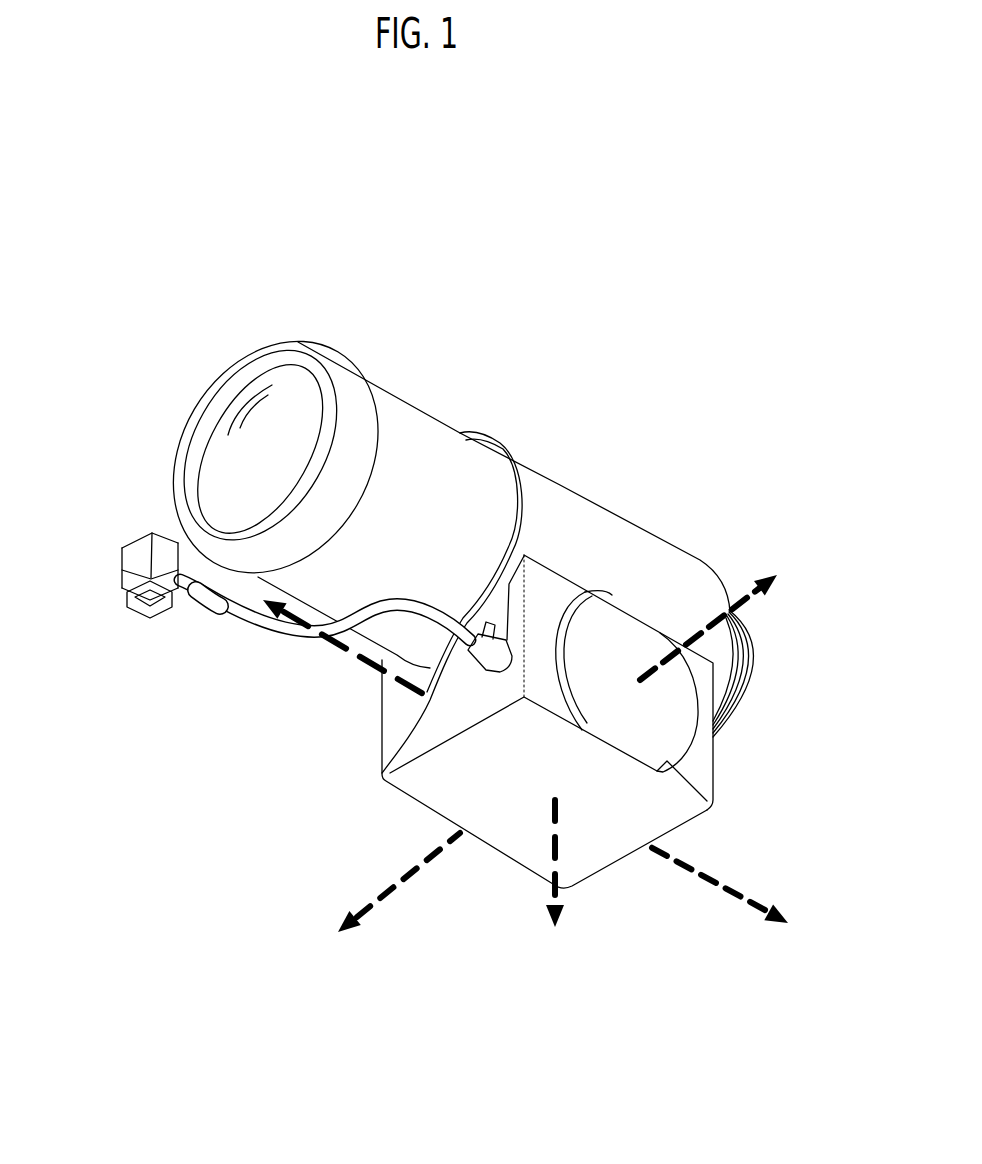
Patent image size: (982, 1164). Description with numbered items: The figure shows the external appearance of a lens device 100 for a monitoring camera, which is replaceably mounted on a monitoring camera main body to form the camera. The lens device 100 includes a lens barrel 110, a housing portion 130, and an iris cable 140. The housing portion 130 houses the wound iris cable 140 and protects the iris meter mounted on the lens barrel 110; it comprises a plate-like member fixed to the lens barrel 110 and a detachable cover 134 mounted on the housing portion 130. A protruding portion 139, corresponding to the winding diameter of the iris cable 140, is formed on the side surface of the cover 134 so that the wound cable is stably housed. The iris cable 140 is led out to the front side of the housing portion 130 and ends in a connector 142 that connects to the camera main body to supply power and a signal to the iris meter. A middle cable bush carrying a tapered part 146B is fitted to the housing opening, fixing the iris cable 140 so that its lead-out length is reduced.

The lens device 100 is at (550, 275).
The lens barrel 110 is at (552, 463).
The housing portion 130 is at (485, 853).
The cover 134 is at (652, 845).
The protruding portion 139 is at (675, 733).
The iris cable 140 is at (297, 640).
The connector 142 is at (116, 558).
The tapered part 146B is at (381, 773).